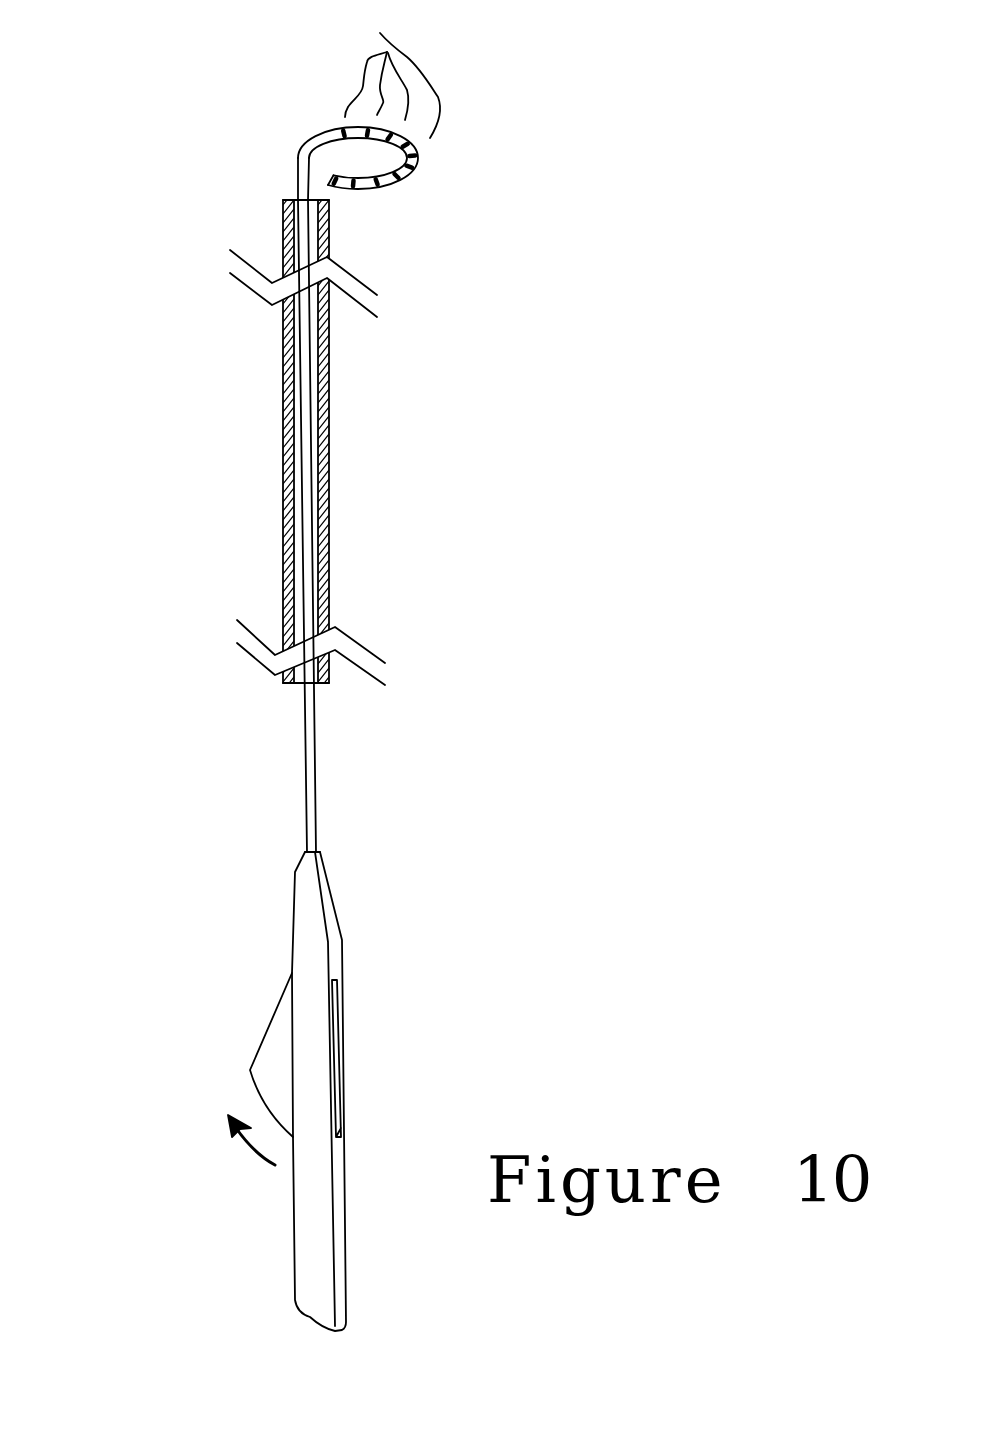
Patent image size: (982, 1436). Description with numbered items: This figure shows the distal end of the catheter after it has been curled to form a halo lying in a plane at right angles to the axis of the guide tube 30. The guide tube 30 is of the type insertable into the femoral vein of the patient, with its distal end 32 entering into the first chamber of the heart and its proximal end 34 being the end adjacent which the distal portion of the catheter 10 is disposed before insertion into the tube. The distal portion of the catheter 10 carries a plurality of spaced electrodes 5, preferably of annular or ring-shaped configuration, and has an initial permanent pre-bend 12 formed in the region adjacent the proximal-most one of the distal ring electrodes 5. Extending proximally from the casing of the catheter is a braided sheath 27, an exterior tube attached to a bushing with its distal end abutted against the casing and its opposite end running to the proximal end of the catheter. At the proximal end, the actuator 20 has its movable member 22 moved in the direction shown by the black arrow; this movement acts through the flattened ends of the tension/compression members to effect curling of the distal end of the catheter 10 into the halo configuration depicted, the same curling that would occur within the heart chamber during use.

The spaced electrodes 5 is at (392, 69).
The distal portion of the catheter 10 is at (433, 167).
The pre-bend 12 is at (293, 148).
The actuator 20 is at (400, 1044).
The movable member 22 is at (253, 1040).
The braided sheath 27 is at (415, 812).
The guide tube 30 is at (422, 505).
The distal end of the guide tube 32 is at (285, 194).
The proximal end of the guide tube 34 is at (421, 724).